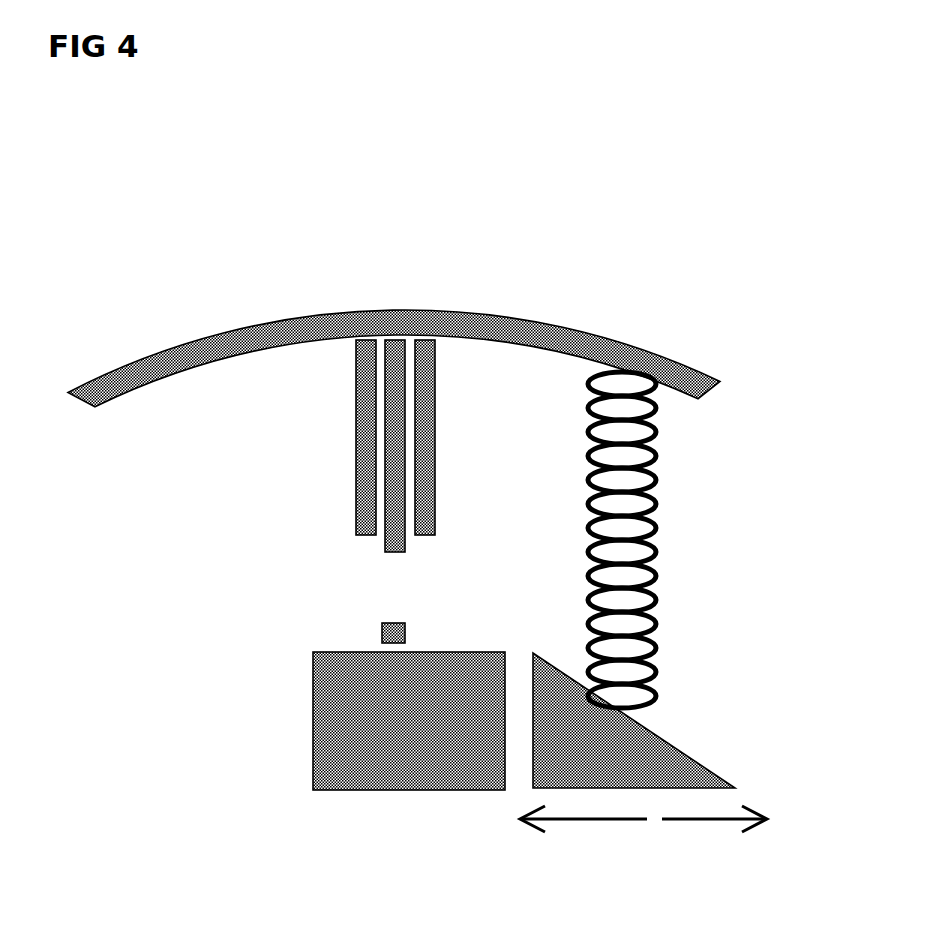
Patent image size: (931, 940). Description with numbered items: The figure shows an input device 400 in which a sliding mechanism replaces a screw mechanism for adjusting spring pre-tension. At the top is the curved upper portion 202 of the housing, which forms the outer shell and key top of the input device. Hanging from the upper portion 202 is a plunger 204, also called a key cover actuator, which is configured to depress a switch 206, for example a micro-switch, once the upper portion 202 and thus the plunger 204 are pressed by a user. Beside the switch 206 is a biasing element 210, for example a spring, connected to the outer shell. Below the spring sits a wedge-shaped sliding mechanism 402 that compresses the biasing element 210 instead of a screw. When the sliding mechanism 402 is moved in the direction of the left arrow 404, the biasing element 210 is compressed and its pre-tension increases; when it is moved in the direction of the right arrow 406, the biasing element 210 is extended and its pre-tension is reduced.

The input device 400 is at (752, 101).
The upper portion of the housing 202 is at (265, 320).
The plunger 204 is at (355, 390).
The switch 206 is at (313, 755).
The biasing element 210 is at (658, 527).
The sliding mechanism 402 is at (697, 759).
The left arrow 404 is at (597, 821).
The right arrow 406 is at (730, 822).